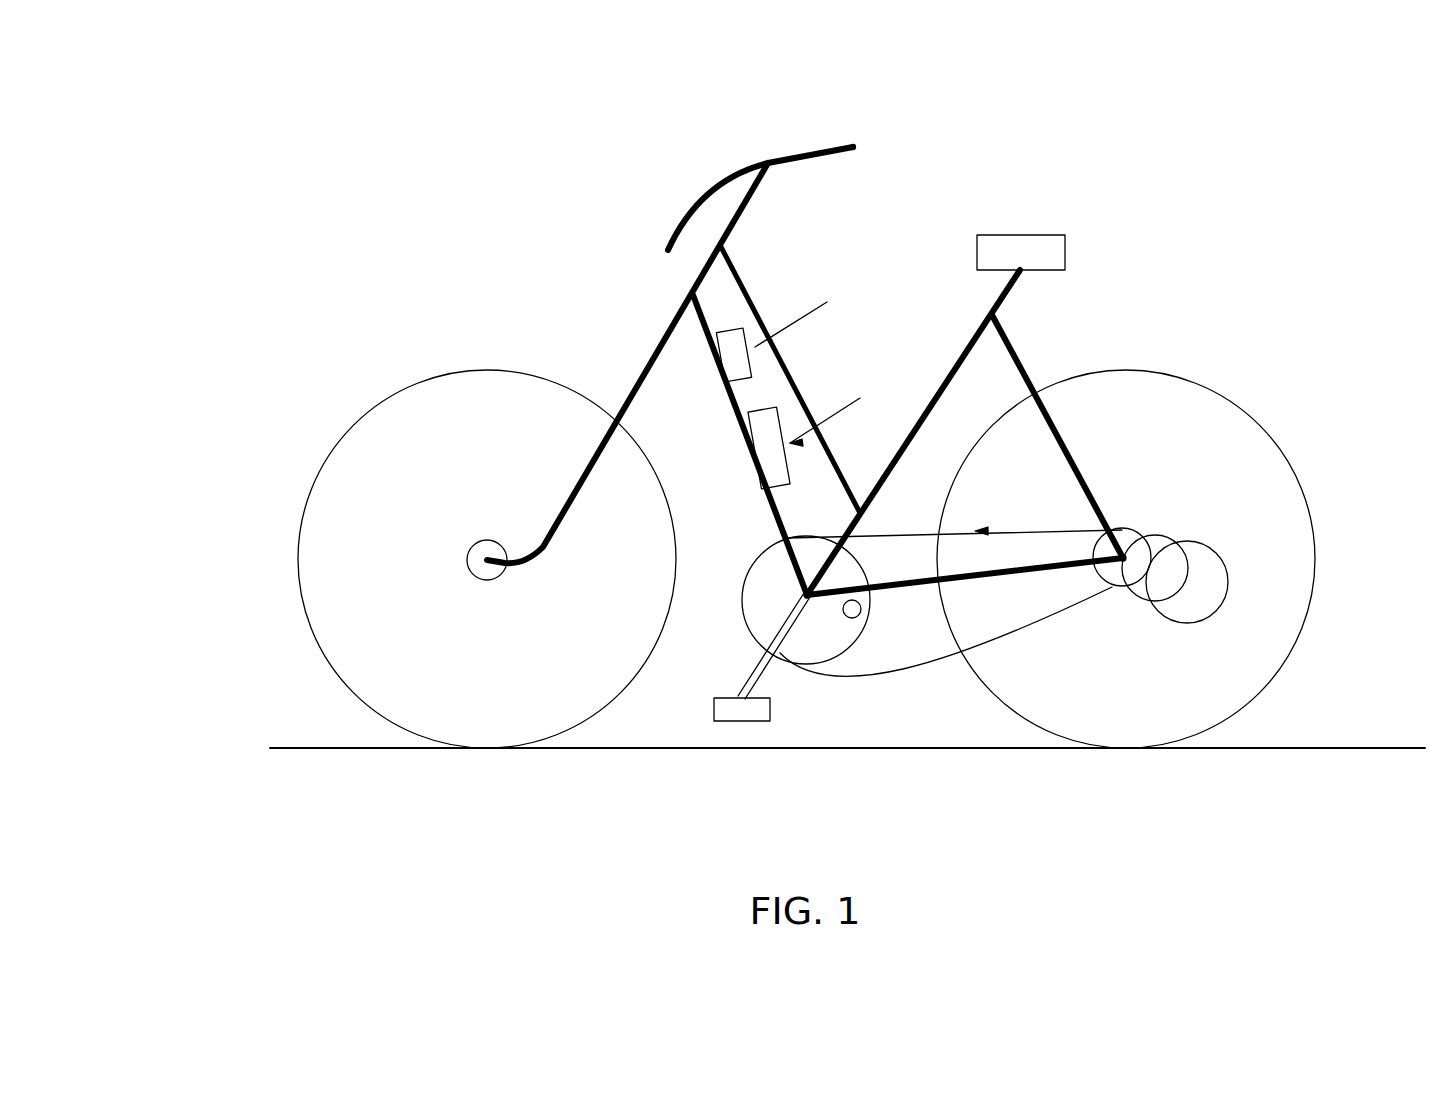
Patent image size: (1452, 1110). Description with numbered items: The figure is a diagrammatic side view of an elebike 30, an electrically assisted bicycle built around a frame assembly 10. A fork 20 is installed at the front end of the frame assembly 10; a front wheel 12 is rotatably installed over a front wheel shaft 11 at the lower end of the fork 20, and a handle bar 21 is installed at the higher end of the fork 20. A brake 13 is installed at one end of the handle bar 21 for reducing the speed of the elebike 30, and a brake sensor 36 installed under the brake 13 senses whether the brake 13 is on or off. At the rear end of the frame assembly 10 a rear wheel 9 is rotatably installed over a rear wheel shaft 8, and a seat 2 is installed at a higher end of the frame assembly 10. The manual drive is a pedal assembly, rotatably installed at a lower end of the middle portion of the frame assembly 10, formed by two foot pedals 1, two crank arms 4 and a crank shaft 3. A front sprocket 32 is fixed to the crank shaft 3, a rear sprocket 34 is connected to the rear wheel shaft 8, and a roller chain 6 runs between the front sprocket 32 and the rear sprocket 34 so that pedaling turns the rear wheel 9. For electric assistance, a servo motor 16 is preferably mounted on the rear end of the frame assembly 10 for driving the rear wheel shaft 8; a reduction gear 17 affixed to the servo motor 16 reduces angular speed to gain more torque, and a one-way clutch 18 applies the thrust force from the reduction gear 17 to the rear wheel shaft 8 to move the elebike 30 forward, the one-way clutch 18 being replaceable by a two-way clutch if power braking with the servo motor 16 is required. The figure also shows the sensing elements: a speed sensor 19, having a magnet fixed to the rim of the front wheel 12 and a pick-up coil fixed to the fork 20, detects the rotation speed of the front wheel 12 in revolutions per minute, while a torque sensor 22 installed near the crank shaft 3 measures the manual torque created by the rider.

The foot pedal 1 is at (737, 725).
The seat 2 is at (1025, 230).
The crank shaft 3 is at (795, 600).
The crank arm 4 is at (792, 708).
The roller chain 6 is at (951, 684).
The rear wheel shaft 8 is at (1142, 691).
The rear wheel 9 is at (1325, 590).
The frame assembly 10 is at (1042, 362).
The front wheel shaft 11 is at (450, 570).
The front wheel 12 is at (327, 455).
The brake 13 is at (818, 148).
The servo motor 16 is at (1230, 570).
The reduction gear 17 is at (1163, 525).
The one-way clutch 18 is at (1184, 684).
The speed sensor 19 is at (613, 415).
The fork 20 is at (653, 350).
The handle bar 21 is at (772, 143).
The torque sensor 22 is at (899, 717).
The elebike 30 is at (1215, 205).
The front sprocket 32 is at (742, 575).
The rear sprocket 34 is at (1145, 530).
The brake sensor 36 is at (862, 145).